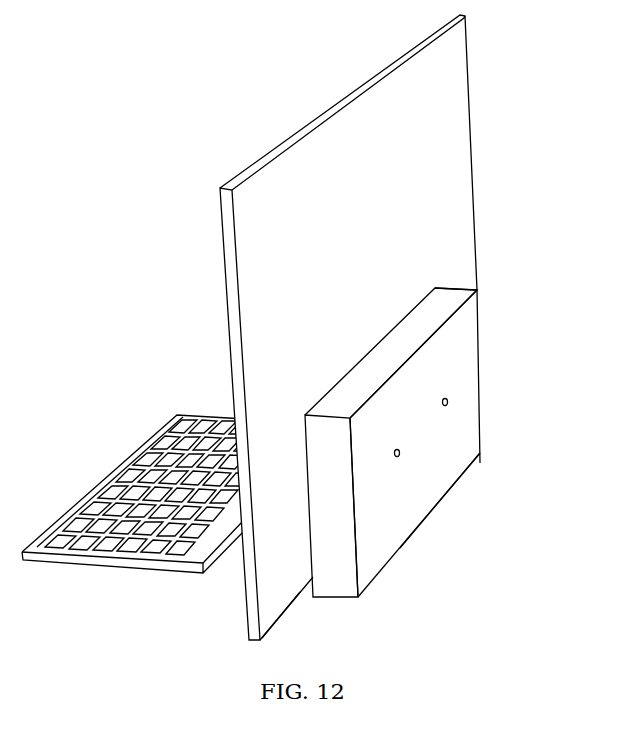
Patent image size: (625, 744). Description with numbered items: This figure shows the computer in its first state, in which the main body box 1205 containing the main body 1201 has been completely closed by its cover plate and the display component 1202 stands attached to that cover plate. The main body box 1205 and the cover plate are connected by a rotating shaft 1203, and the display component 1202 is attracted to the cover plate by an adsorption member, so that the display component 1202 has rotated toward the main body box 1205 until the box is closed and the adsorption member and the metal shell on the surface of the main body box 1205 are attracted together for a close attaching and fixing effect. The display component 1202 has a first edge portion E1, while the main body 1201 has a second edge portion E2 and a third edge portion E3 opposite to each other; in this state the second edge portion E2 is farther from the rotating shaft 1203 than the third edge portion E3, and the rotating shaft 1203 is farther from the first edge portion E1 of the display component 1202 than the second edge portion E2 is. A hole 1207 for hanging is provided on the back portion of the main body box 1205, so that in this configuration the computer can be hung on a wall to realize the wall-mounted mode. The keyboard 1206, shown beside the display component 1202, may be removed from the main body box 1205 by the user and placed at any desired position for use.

The main body 1201 is at (390, 527).
The display component 1202 is at (438, 78).
The rotating shaft 1203 is at (450, 308).
The main body box 1205 is at (460, 345).
The keyboard 1206 is at (117, 462).
The hole for hanging 1207 is at (400, 457).
The first edge portion E1 is at (287, 607).
The second edge portion E2 is at (443, 508).
The third edge portion E3 is at (432, 293).